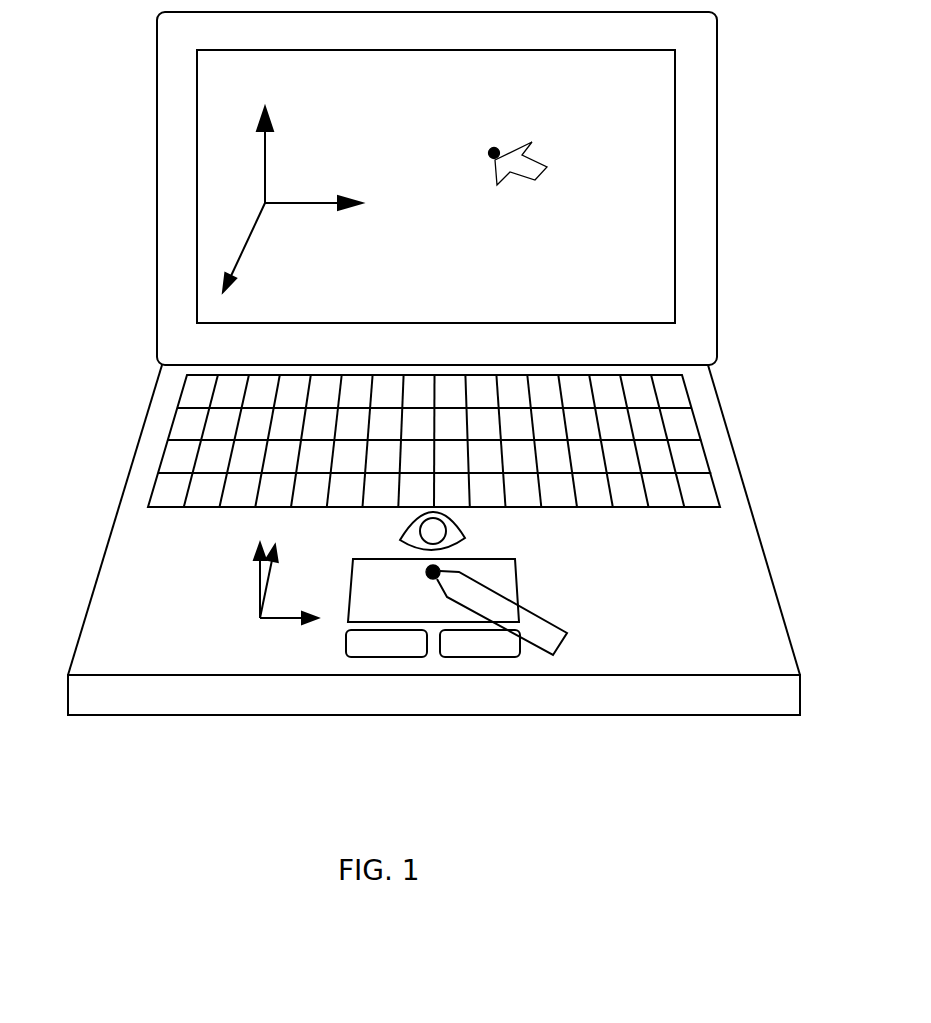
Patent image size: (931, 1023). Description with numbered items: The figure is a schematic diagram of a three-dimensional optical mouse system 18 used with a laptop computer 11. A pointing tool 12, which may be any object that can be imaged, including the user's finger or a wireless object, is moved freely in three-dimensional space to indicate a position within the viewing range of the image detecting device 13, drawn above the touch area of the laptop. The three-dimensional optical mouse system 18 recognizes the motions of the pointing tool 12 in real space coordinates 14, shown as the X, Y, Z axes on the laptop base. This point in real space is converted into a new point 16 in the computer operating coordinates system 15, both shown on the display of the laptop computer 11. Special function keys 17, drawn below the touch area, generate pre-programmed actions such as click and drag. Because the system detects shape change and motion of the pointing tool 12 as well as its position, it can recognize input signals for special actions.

The laptop computer 11 is at (148, 199).
The pointing tool 12 is at (567, 635).
The image detecting device 13 is at (463, 524).
The real space coordinates 14 is at (255, 582).
The computer operating coordinates system 15 is at (280, 187).
The new point 16 is at (519, 187).
The special function keys 17 is at (372, 663).
The three-dimensional optical mouse system 18 is at (670, 582).